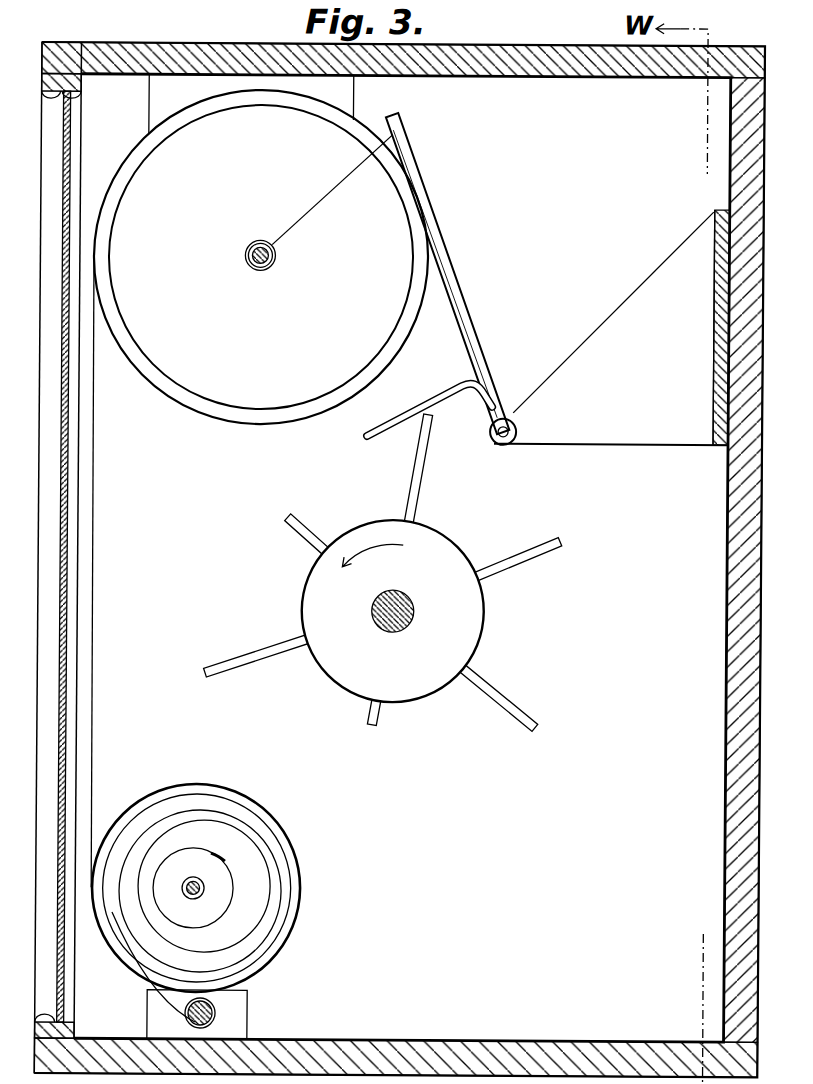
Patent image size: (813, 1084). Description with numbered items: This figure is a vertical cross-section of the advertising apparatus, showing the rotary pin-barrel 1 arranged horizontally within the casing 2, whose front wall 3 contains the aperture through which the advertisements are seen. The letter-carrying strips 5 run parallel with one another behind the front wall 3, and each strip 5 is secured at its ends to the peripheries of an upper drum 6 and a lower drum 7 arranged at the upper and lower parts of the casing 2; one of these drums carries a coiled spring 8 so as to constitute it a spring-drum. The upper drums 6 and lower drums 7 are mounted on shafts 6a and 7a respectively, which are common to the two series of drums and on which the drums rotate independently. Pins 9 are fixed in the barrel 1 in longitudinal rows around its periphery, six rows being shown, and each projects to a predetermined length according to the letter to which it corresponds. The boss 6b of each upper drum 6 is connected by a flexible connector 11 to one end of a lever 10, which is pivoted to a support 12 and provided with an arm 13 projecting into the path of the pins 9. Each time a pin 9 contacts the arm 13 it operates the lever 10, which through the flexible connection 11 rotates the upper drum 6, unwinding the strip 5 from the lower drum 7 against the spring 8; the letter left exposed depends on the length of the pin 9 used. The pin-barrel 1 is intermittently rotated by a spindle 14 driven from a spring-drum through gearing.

The rotary pin-barrel 1 is at (392, 611).
The casing 2 is at (731, 597).
The front wall 3 is at (42, 567).
The strips 5 is at (98, 537).
The upper drum 6 is at (137, 152).
The shaft 6a is at (254, 265).
The boss 6b is at (277, 257).
The lower drum 7 is at (306, 919).
The shaft 7a is at (258, 872).
The coiled spring 8 is at (276, 864).
The pins 9 is at (422, 484).
The lever 10 is at (472, 299).
The flexible connector 11 is at (317, 194).
The support 12 is at (612, 327).
The arm 13 is at (422, 404).
The spindle 14 is at (401, 620).